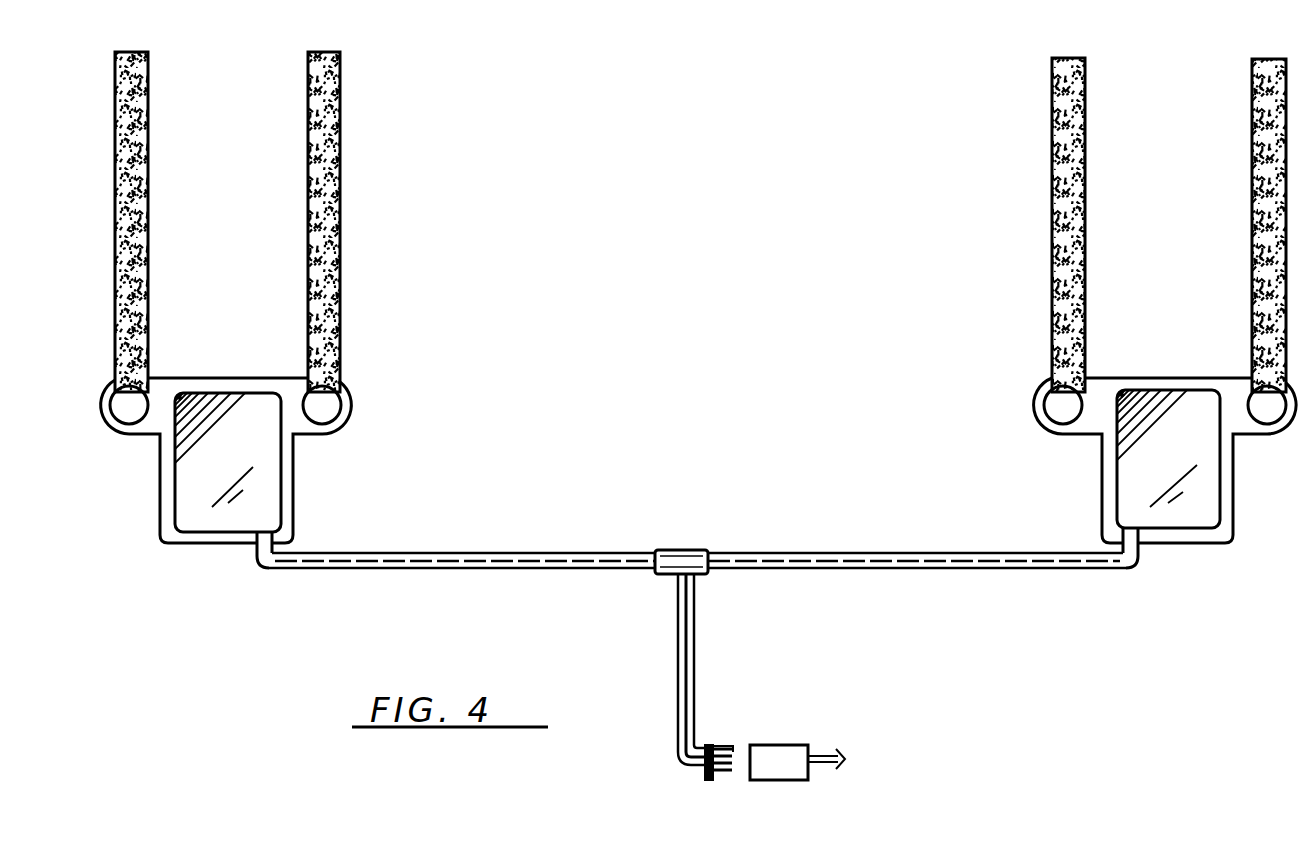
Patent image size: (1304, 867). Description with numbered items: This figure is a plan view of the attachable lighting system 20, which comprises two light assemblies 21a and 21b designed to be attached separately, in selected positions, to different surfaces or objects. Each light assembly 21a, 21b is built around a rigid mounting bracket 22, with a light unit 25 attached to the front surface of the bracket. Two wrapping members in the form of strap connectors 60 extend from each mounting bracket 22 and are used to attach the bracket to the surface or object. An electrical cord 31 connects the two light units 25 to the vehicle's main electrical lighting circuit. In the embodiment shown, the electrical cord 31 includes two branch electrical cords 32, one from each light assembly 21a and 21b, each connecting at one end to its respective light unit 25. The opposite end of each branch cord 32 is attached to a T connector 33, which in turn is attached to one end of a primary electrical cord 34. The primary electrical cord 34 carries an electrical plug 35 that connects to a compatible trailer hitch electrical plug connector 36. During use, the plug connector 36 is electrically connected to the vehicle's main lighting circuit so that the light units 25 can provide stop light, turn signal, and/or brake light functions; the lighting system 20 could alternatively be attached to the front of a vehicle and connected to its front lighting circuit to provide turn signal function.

The lighting system 20 is at (622, 132).
The light assembly 21a is at (355, 400).
The light assembly 21b is at (1031, 403).
The rigid mounting bracket 22 is at (296, 472).
The light unit 25 is at (284, 516).
The electrical cord 31 is at (678, 628).
The branch electrical cord 32 is at (495, 553).
The T connector 33 is at (688, 550).
The primary electrical cord 34 is at (694, 675).
The electrical plug 35 is at (702, 767).
The trailer hitch electrical plug connector 36 is at (794, 745).
The strap connector 60 is at (308, 92).